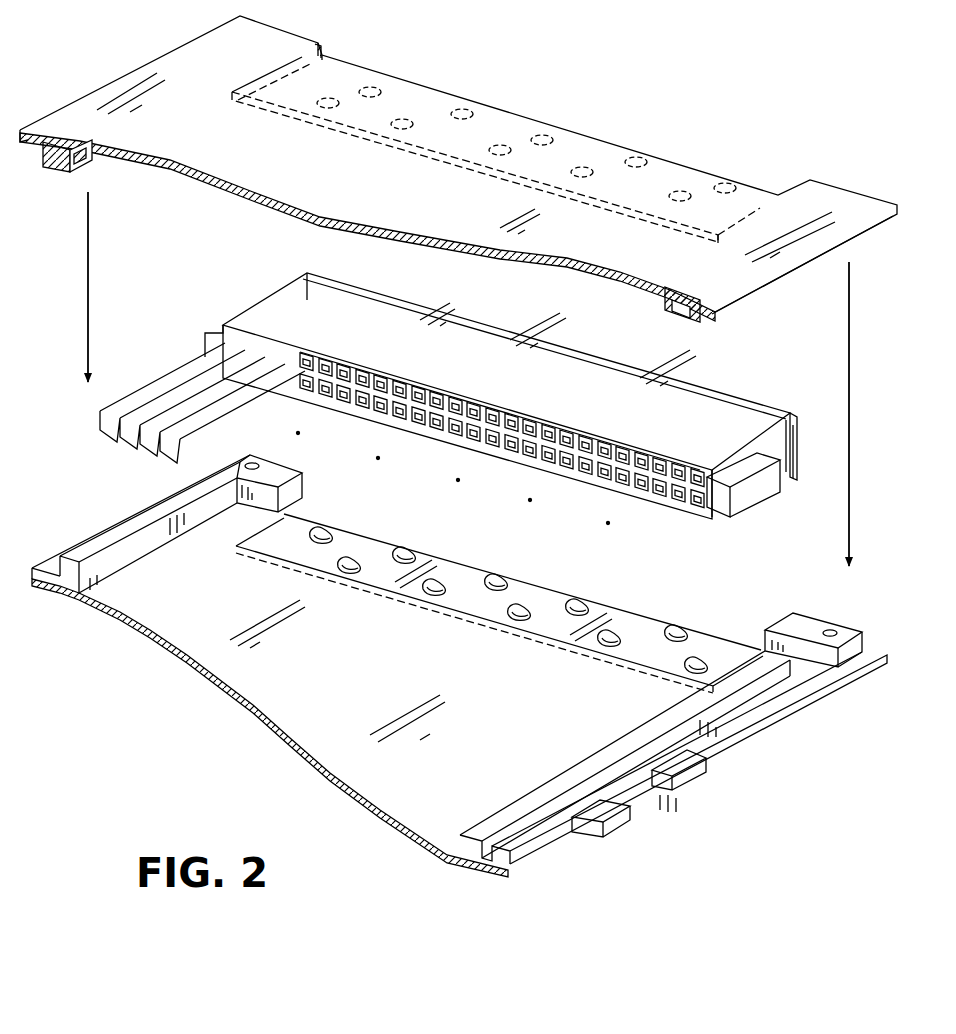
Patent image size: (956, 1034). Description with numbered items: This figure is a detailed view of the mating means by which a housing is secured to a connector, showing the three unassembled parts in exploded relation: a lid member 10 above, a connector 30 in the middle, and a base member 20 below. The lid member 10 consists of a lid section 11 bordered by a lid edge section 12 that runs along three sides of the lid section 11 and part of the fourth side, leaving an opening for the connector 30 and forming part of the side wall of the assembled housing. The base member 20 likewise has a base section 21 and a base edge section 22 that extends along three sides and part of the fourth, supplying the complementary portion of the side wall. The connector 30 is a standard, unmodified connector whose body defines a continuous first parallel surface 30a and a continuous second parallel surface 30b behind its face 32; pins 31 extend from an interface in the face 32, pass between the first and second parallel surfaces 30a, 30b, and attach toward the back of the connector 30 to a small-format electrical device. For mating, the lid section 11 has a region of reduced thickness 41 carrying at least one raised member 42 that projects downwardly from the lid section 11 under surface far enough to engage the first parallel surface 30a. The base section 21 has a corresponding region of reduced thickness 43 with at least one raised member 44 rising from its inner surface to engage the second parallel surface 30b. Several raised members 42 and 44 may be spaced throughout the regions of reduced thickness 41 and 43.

The lid member 10 is at (20, 117).
The lid section 11 is at (180, 148).
The lid edge section 12 is at (697, 313).
The region of reduced thickness 41 is at (587, 153).
The raised member 42 is at (462, 108).
The connector 30 is at (270, 294).
The first parallel surface 30a is at (497, 353).
The second parallel surface 30b is at (480, 452).
The pins 31 is at (167, 390).
The face 32 is at (797, 434).
The base member 20 is at (552, 866).
The base section 21 is at (372, 756).
The base edge section 22 is at (90, 568).
The region of reduced thickness 43 is at (633, 622).
The raised member 44 is at (403, 553).